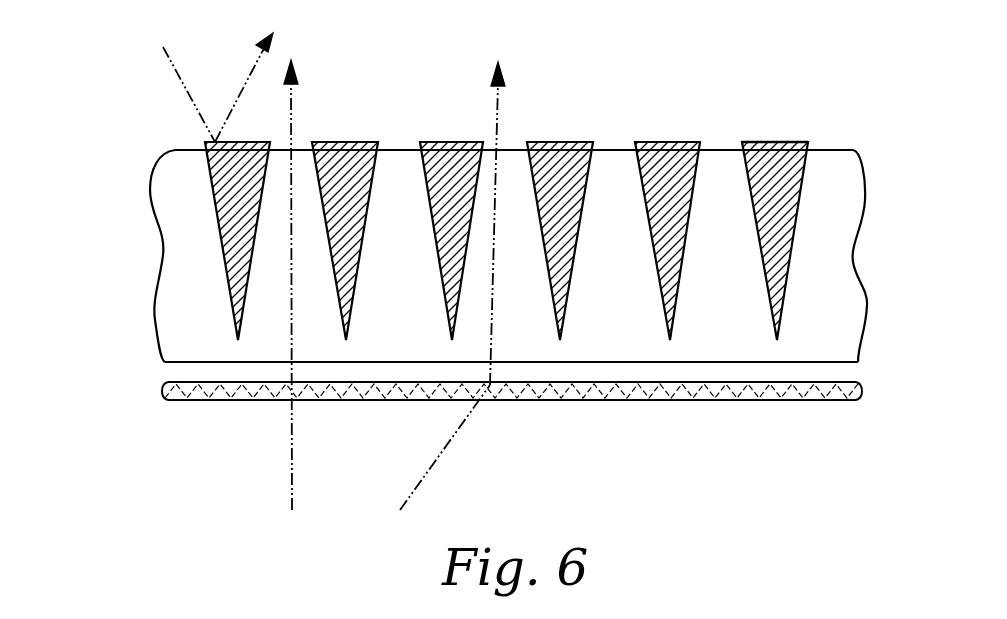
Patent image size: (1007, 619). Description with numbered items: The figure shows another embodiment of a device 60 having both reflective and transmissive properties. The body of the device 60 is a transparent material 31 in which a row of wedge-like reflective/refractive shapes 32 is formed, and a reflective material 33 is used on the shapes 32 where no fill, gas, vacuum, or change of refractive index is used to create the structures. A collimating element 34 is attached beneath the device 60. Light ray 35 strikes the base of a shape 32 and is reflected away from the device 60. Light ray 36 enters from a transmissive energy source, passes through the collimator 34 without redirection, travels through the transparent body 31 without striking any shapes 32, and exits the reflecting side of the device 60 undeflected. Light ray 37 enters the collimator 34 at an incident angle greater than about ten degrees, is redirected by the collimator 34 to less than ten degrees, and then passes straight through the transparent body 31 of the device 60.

The device 60 is at (82, 233).
The transparent material 31 is at (817, 295).
The reflective/refractive shapes 32 is at (220, 230).
The reflective material 33 is at (780, 142).
The collimating element 34 is at (768, 400).
The light ray 35 is at (190, 98).
The light ray 36 is at (291, 107).
The light ray 37 is at (498, 107).